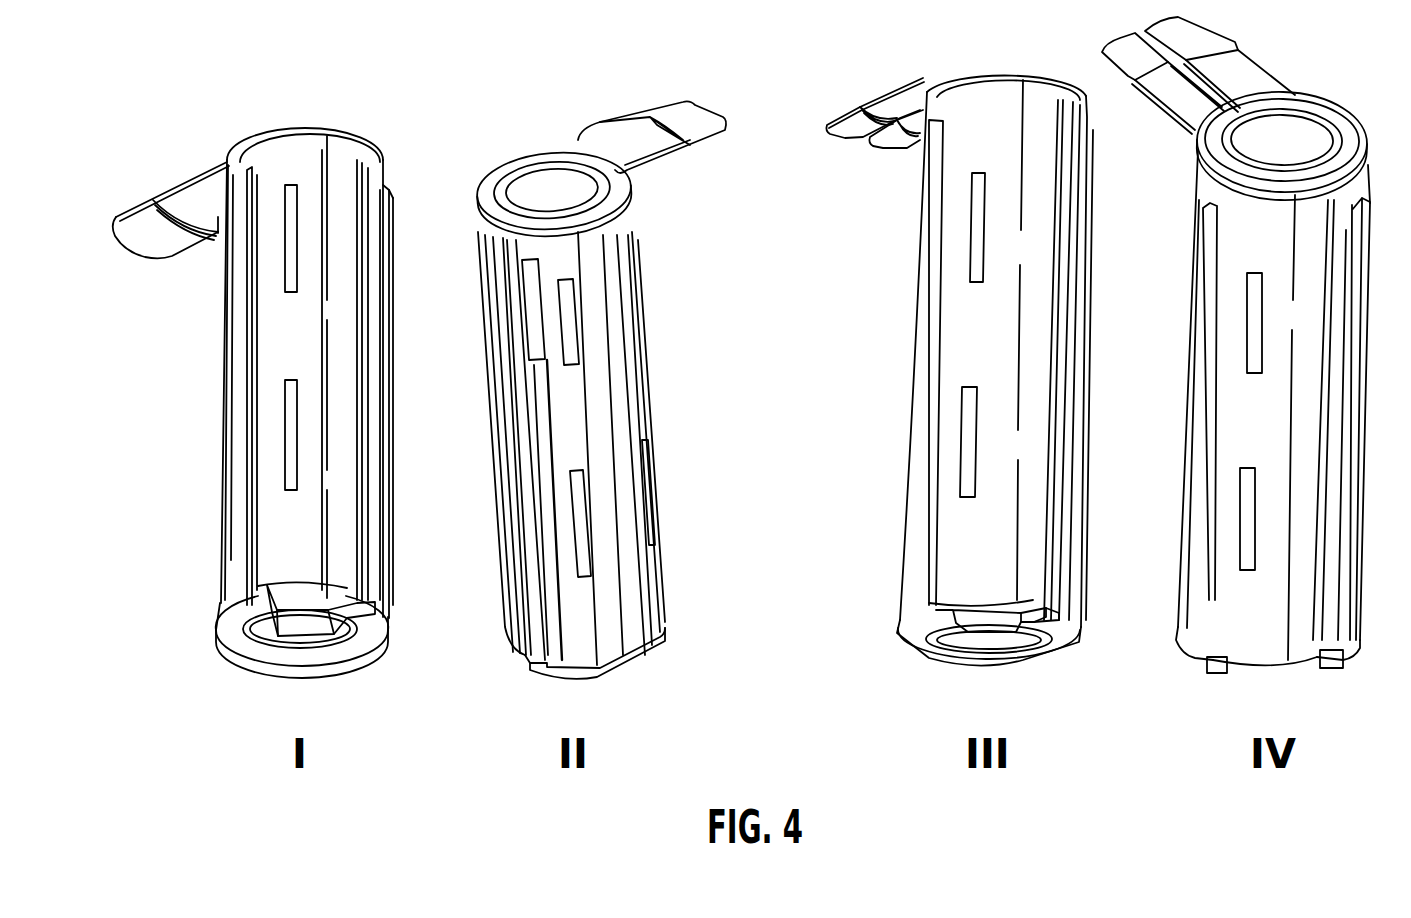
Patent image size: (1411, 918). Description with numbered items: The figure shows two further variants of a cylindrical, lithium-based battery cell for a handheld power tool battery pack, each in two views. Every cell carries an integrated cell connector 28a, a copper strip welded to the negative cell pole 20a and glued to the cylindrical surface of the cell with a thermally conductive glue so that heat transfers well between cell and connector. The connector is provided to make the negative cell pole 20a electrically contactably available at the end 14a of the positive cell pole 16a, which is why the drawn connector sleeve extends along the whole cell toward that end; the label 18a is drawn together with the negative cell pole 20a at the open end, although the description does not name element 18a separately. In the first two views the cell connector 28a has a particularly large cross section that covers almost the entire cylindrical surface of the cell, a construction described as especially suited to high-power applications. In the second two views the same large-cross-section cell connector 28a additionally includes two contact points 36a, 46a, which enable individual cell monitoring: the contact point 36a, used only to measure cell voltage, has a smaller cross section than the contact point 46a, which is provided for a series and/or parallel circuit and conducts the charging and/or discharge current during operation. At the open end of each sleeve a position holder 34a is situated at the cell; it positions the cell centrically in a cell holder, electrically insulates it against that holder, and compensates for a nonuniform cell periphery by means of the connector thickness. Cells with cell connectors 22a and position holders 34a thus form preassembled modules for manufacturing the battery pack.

The end 14a is at (253, 335).
The positive cell pole 16a is at (286, 126).
The contact element 18a is at (266, 662).
The negative cell pole 20a is at (300, 625).
The cell connector 22a is at (901, 96).
The cell connector 28a is at (287, 522).
The position holder 34a is at (363, 652).
The contact point 36a is at (1242, 62).
The contact point 46a is at (680, 112).